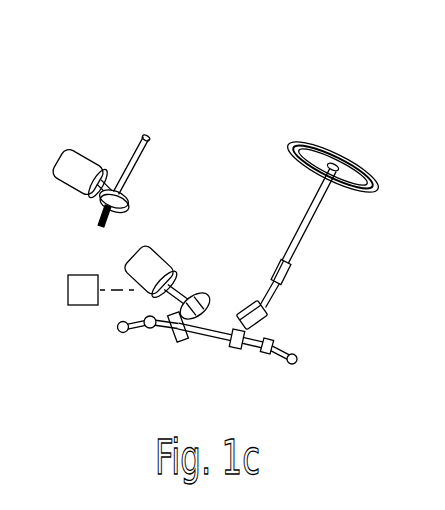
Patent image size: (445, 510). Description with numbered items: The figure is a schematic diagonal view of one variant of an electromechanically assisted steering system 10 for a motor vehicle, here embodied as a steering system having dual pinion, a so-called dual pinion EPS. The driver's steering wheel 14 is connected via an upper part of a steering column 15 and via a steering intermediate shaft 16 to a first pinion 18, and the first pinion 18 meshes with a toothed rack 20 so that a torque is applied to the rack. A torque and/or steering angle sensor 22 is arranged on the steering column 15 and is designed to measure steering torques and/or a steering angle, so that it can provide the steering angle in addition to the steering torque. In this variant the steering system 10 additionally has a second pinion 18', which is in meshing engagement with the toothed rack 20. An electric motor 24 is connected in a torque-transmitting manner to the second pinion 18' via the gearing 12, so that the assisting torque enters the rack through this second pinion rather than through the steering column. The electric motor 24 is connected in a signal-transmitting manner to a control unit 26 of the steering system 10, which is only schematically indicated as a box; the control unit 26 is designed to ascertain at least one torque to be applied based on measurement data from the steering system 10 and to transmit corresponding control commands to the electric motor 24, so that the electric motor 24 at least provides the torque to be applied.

The steering system 10 is at (262, 118).
The gearing 12 is at (187, 276).
The steering wheel 14 is at (337, 146).
The steering column 15 is at (328, 195).
The steering intermediate shaft 16 is at (283, 280).
The first pinion 18 is at (259, 375).
The second pinion 18' is at (100, 277).
The toothed rack 20 is at (210, 345).
The torque and/or steering angle sensor 22 is at (270, 326).
The electric motor 24 is at (70, 153).
The control unit 26 is at (80, 307).